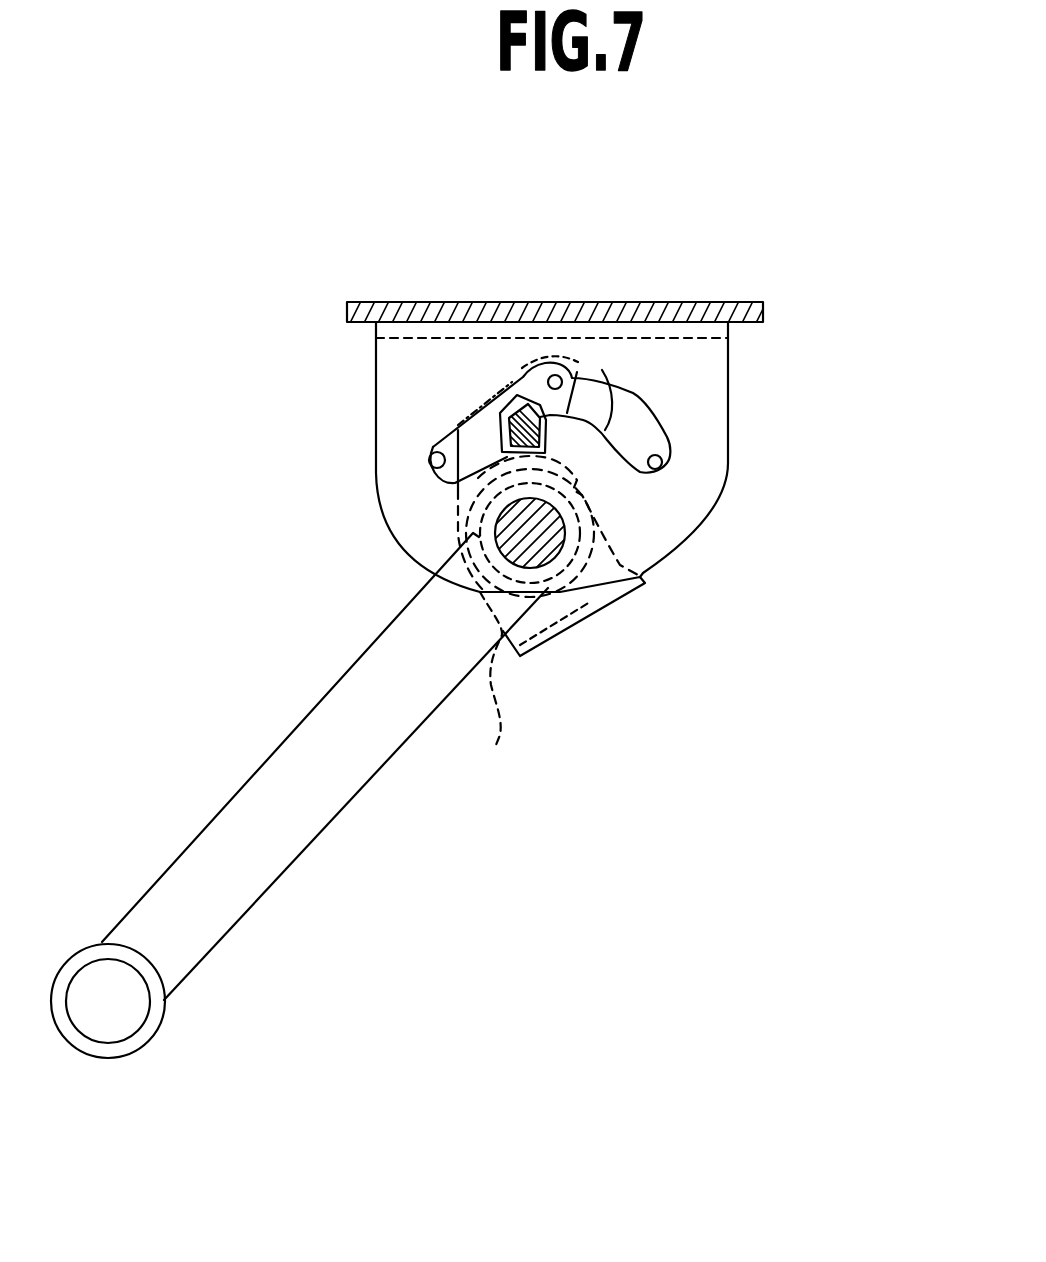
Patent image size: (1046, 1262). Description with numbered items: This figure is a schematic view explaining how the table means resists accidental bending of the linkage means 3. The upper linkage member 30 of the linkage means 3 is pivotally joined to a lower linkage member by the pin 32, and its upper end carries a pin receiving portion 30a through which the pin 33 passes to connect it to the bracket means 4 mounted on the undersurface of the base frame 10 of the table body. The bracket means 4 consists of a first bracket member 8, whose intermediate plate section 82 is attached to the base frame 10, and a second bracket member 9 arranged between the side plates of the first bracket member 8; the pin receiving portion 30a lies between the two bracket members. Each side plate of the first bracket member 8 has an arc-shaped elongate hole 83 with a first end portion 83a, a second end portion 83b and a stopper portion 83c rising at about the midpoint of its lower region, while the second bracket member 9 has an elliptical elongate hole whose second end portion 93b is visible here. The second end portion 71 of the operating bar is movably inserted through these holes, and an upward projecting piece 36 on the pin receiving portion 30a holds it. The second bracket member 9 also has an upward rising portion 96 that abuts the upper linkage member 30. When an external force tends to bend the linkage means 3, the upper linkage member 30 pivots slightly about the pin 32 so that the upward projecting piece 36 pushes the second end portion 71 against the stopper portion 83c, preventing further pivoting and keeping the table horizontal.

The linkage means 3 is at (270, 890).
The bracket means 4 is at (760, 343).
The first bracket member 8 is at (366, 374).
The second bracket member 9 is at (587, 630).
The base frame 10 is at (690, 302).
The upper linkage member 30 is at (314, 702).
The pin receiving portion 30a is at (620, 507).
The pin 32 is at (103, 1017).
The pin 33 is at (557, 545).
The upward projecting piece 36 is at (500, 398).
The second end portion of the operating bar 71 is at (457, 481).
The intermediate plate section 82 is at (397, 337).
The elongate hole 83 is at (638, 429).
The first end portion 83a is at (437, 449).
The second end portion 83b is at (668, 458).
The stopper portion 83c is at (535, 373).
The second end portion 93b is at (577, 372).
The upward rising portion 96 is at (490, 687).